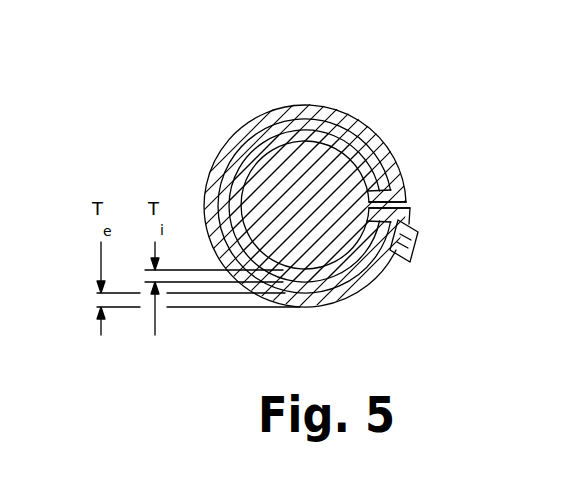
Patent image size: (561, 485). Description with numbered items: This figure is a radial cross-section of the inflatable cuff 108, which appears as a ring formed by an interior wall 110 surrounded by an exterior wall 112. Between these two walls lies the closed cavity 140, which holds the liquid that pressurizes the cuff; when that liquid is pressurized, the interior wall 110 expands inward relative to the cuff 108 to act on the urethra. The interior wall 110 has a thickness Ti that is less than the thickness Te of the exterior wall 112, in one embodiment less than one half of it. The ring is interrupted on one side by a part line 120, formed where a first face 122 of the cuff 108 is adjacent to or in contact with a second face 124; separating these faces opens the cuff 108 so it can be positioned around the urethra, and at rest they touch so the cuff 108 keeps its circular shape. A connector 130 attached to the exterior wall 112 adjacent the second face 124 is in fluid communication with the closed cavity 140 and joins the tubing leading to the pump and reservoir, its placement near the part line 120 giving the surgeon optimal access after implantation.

The cuff 108 is at (429, 90).
The interior wall 110 is at (256, 259).
The exterior wall 112 is at (233, 136).
The part line 120 is at (420, 203).
The first face 122 is at (413, 202).
The second face 124 is at (409, 209).
The connector 130 is at (410, 263).
The closed cavity 140 is at (300, 126).